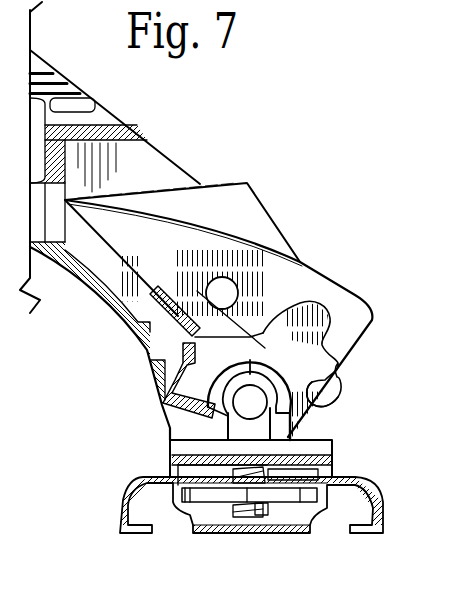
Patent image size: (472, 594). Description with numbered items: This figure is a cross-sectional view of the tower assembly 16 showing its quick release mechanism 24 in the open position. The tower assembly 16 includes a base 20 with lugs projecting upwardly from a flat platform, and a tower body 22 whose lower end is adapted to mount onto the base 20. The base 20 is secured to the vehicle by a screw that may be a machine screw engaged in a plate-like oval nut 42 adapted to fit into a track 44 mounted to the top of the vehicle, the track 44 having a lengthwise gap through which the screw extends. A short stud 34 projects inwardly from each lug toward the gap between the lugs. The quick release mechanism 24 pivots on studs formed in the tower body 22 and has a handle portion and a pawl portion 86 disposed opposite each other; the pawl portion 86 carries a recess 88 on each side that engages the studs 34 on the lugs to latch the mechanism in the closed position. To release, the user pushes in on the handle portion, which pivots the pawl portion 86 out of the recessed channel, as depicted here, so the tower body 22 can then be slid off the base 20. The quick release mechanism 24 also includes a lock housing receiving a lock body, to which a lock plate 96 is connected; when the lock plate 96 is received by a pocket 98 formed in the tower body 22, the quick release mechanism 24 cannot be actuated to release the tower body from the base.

The tower assembly 16 is at (246, 120).
The base 20 is at (334, 438).
The tower body 22 is at (79, 282).
The quick release mechanism 24 is at (242, 185).
The stud 34 is at (182, 429).
The oval nut 42 is at (276, 504).
The track 44 is at (128, 477).
The pawl portion 86 is at (327, 398).
The recess 88 is at (333, 362).
The lock plate 96 is at (150, 338).
The pocket 98 is at (178, 352).